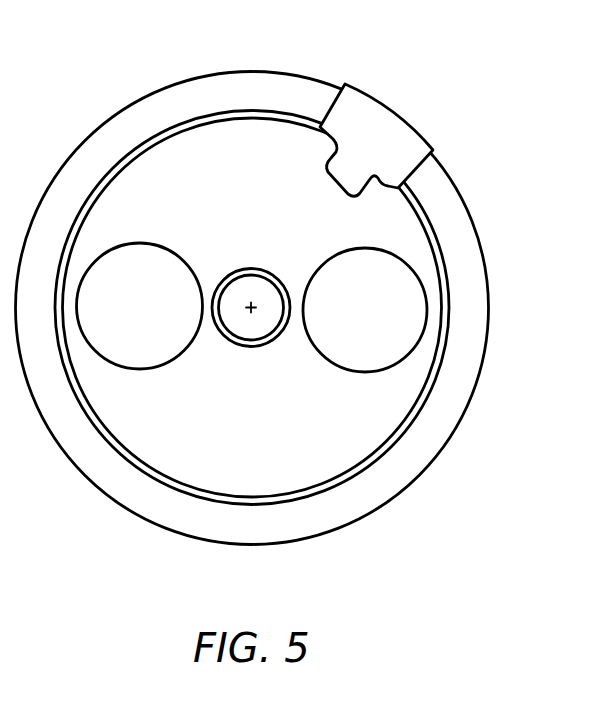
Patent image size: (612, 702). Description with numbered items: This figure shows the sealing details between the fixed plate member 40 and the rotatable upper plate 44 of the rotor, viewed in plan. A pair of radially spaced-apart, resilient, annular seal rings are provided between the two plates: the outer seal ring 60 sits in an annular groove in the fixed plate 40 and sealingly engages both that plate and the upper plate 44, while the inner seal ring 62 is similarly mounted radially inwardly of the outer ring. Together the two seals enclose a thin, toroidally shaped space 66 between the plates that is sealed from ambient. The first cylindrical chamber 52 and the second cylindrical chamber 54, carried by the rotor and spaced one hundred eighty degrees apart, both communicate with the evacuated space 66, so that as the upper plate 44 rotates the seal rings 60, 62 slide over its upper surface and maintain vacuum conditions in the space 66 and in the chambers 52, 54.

The fixed plate member 40 is at (405, 117).
The upper plate 44 is at (482, 253).
The first cylindrical chamber 52 is at (126, 318).
The second cylindrical chamber 54 is at (352, 323).
The outer seal ring 60 is at (283, 111).
The inner seal ring 62 is at (251, 347).
The toroidally shaped space 66 is at (221, 196).